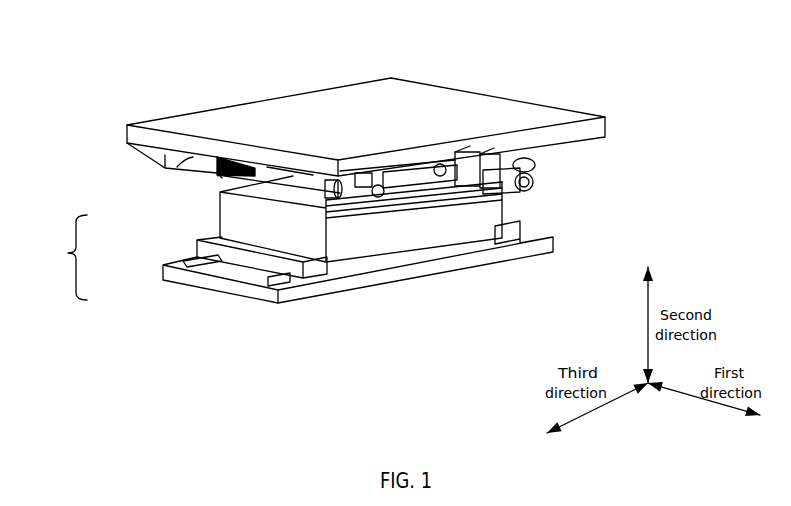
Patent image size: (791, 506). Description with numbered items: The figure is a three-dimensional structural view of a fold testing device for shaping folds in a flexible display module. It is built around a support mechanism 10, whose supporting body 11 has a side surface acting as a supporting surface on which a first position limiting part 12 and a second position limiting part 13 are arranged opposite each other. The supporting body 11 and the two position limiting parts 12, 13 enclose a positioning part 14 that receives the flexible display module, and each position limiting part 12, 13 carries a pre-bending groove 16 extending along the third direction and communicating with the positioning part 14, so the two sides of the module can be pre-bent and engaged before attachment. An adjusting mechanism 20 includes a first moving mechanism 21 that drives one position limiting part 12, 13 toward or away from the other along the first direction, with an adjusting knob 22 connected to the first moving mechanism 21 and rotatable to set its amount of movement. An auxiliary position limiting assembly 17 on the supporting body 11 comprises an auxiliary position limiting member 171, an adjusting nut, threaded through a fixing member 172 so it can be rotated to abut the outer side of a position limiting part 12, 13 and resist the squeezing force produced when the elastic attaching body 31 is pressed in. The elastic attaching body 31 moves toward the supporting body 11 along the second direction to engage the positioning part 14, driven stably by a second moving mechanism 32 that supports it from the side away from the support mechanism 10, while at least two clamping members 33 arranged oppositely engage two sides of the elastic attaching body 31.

The support mechanism 10 is at (532, 86).
The supporting body 11 is at (127, 123).
The first position limiting part 12 is at (293, 187).
The second position limiting part 13 is at (165, 167).
The positioning part 14 is at (60, 78).
The pre-bending groove 16 is at (218, 175).
The auxiliary position limiting assembly 17 is at (442, 326).
The auxiliary position limiting member 171 is at (395, 212).
The fixing member 172 is at (362, 218).
The adjusting mechanism 20 is at (638, 170).
The first moving mechanism 21 is at (502, 196).
The adjusting knob 22 is at (532, 180).
The elastic attaching body 31 is at (237, 213).
The second moving mechanism 32 is at (203, 282).
The clamping member 33 is at (205, 260).